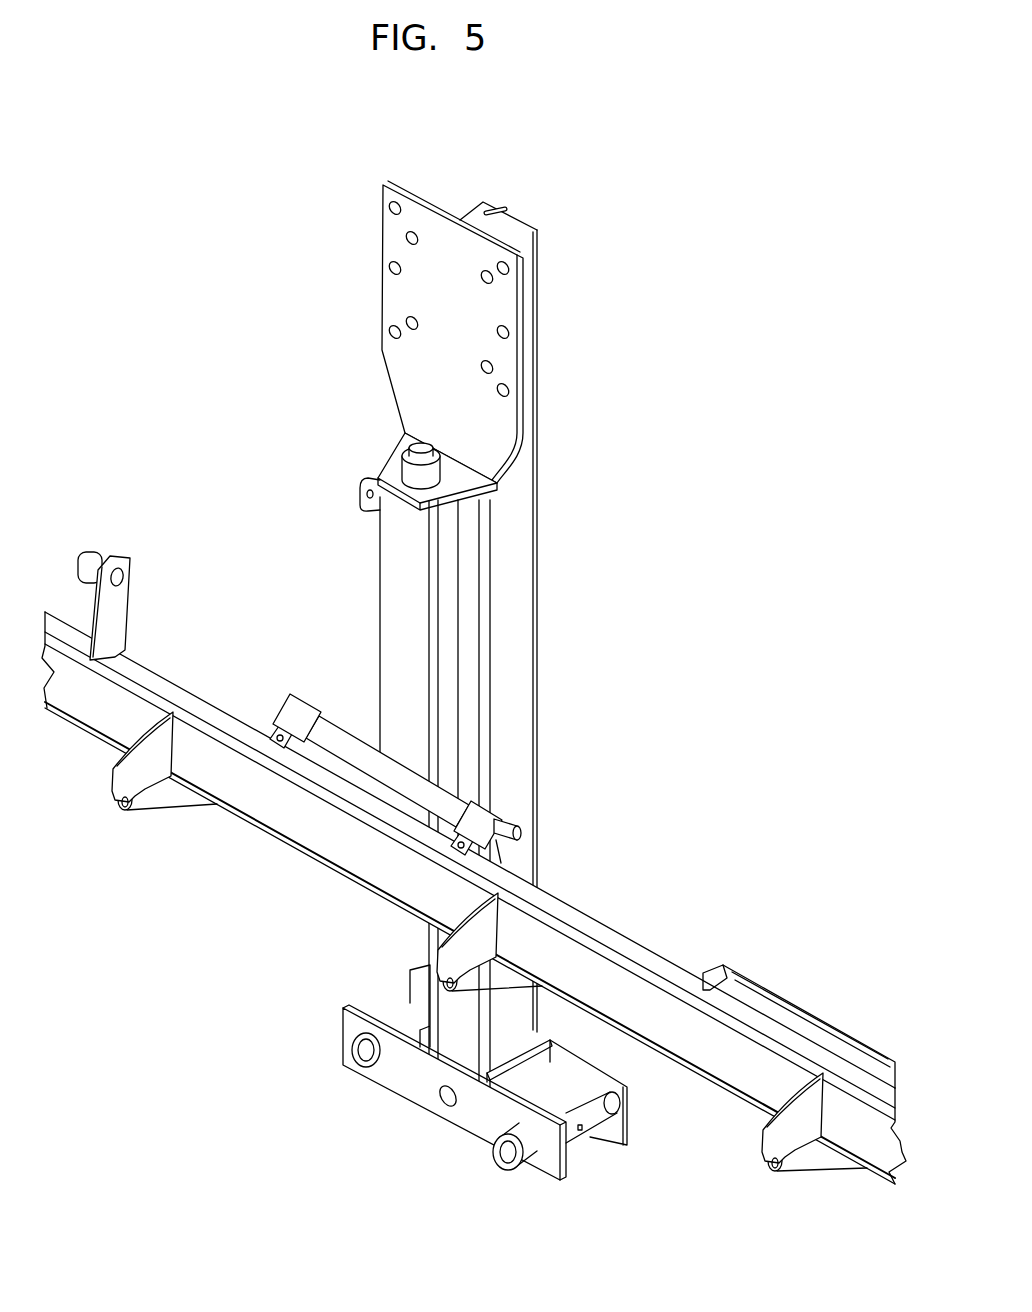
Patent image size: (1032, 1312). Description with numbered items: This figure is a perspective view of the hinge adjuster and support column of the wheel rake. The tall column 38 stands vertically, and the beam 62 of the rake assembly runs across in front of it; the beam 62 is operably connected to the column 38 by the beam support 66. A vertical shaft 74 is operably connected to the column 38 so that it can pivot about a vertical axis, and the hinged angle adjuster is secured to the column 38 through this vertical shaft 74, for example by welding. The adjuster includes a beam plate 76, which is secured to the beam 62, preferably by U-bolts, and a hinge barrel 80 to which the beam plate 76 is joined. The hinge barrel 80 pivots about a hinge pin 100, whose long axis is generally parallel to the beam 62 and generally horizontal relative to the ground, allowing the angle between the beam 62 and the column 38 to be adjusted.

The column 38 is at (506, 680).
The beam 62 is at (152, 667).
The beam support 66 is at (435, 787).
The vertical shaft 74 is at (449, 647).
The beam plate 76 is at (388, 790).
The hinge barrel 80 is at (389, 789).
The hinge pin 100 is at (521, 834).